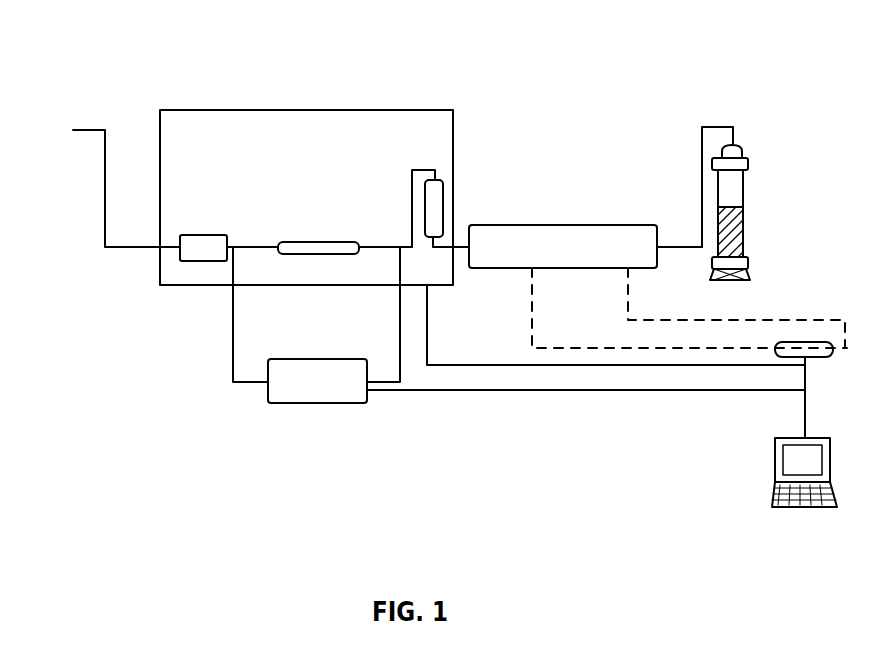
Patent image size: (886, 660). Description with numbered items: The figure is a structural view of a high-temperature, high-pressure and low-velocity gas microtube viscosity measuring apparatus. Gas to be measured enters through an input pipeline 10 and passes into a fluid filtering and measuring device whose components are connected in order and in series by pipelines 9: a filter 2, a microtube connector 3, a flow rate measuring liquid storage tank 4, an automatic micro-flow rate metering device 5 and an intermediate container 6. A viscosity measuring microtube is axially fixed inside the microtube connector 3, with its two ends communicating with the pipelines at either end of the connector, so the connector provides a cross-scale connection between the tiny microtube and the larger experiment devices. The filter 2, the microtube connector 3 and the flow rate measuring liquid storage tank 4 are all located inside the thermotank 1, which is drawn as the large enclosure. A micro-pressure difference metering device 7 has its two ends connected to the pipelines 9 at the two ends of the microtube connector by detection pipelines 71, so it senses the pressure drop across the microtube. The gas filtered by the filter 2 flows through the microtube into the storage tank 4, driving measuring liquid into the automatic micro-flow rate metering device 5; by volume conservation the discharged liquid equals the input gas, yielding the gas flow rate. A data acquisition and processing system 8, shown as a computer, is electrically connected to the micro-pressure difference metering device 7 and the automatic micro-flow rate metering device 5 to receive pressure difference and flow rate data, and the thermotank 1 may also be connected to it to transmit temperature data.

The thermotank 1 is at (331, 109).
The filter 2 is at (203, 245).
The microtube connector 3 is at (310, 240).
The flow rate measuring liquid storage tank 4 is at (437, 200).
The automatic micro-flow rate metering device 5 is at (556, 227).
The intermediate container 6 is at (732, 197).
The micro-pressure difference metering device 7 is at (310, 390).
The detection pipelines 71 is at (398, 302).
The data acquisition and processing system 8 is at (788, 403).
The pipelines 9 is at (253, 246).
The input pipeline 10 is at (105, 172).